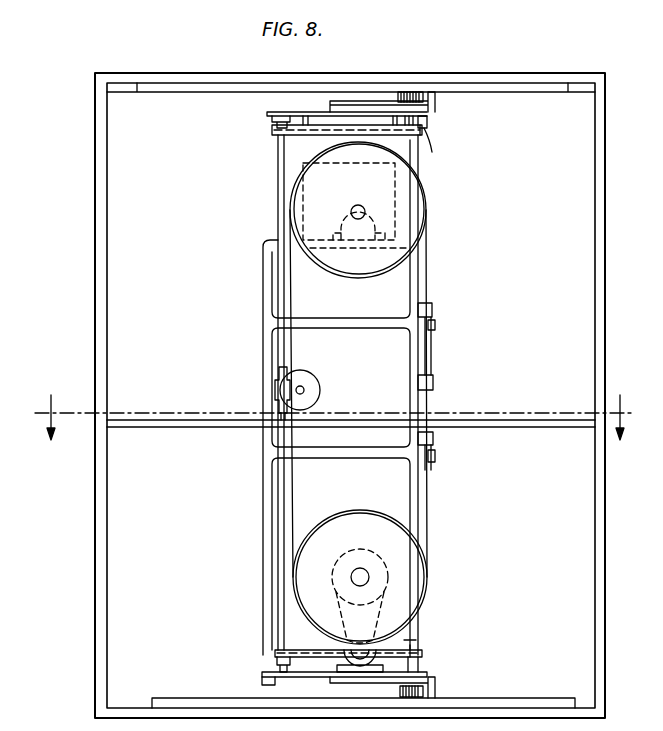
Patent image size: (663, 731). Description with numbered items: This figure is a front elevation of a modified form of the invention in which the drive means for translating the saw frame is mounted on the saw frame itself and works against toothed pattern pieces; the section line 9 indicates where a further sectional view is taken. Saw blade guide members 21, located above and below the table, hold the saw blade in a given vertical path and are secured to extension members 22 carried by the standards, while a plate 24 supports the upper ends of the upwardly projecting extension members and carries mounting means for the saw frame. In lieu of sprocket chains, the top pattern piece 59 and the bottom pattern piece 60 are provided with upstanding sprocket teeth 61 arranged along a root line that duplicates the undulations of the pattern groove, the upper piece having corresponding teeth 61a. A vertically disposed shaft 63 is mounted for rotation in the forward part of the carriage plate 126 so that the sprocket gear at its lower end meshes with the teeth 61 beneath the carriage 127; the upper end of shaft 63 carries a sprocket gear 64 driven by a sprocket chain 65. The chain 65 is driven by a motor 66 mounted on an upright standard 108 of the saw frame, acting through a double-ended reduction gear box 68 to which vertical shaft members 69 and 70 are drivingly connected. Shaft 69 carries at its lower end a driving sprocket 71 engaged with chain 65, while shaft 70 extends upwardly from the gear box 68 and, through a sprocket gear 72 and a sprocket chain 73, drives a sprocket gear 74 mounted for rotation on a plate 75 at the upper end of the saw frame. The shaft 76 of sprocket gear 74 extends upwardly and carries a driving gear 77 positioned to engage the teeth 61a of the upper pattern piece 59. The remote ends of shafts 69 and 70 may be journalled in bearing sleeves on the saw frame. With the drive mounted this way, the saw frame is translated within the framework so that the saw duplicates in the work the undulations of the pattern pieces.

The section line 9- 9 is at (330, 417).
The saw blade guide member 21 is at (434, 386).
The extension member 22 is at (434, 352).
The plate 24 is at (268, 115).
The top pattern piece 59 is at (538, 86).
The bottom pattern piece 60 is at (165, 697).
The sprocket teeth 61 is at (437, 691).
The teeth of upper pattern piece 61a is at (430, 96).
The vertically disposed shaft 63 is at (418, 662).
The sprocket gear 64 is at (422, 656).
The sprocket chain 65 is at (416, 646).
The motor 66 is at (313, 385).
The double-ended reduction gear box 68 is at (281, 402).
The vertical shaft member 69 is at (284, 530).
The vertical shaft member 70 is at (277, 208).
The driving sprocket 71 is at (276, 652).
The sprocket gear 72 is at (272, 131).
The sprocket chain 73 is at (361, 134).
The sprocket gear 74 is at (438, 153).
The plate 75 is at (425, 114).
The shaft 76 is at (422, 123).
The driving gear 77 is at (406, 92).
The upright standard 108 is at (276, 392).
The carriage plate 126 is at (330, 679).
The carriage 127 is at (268, 678).